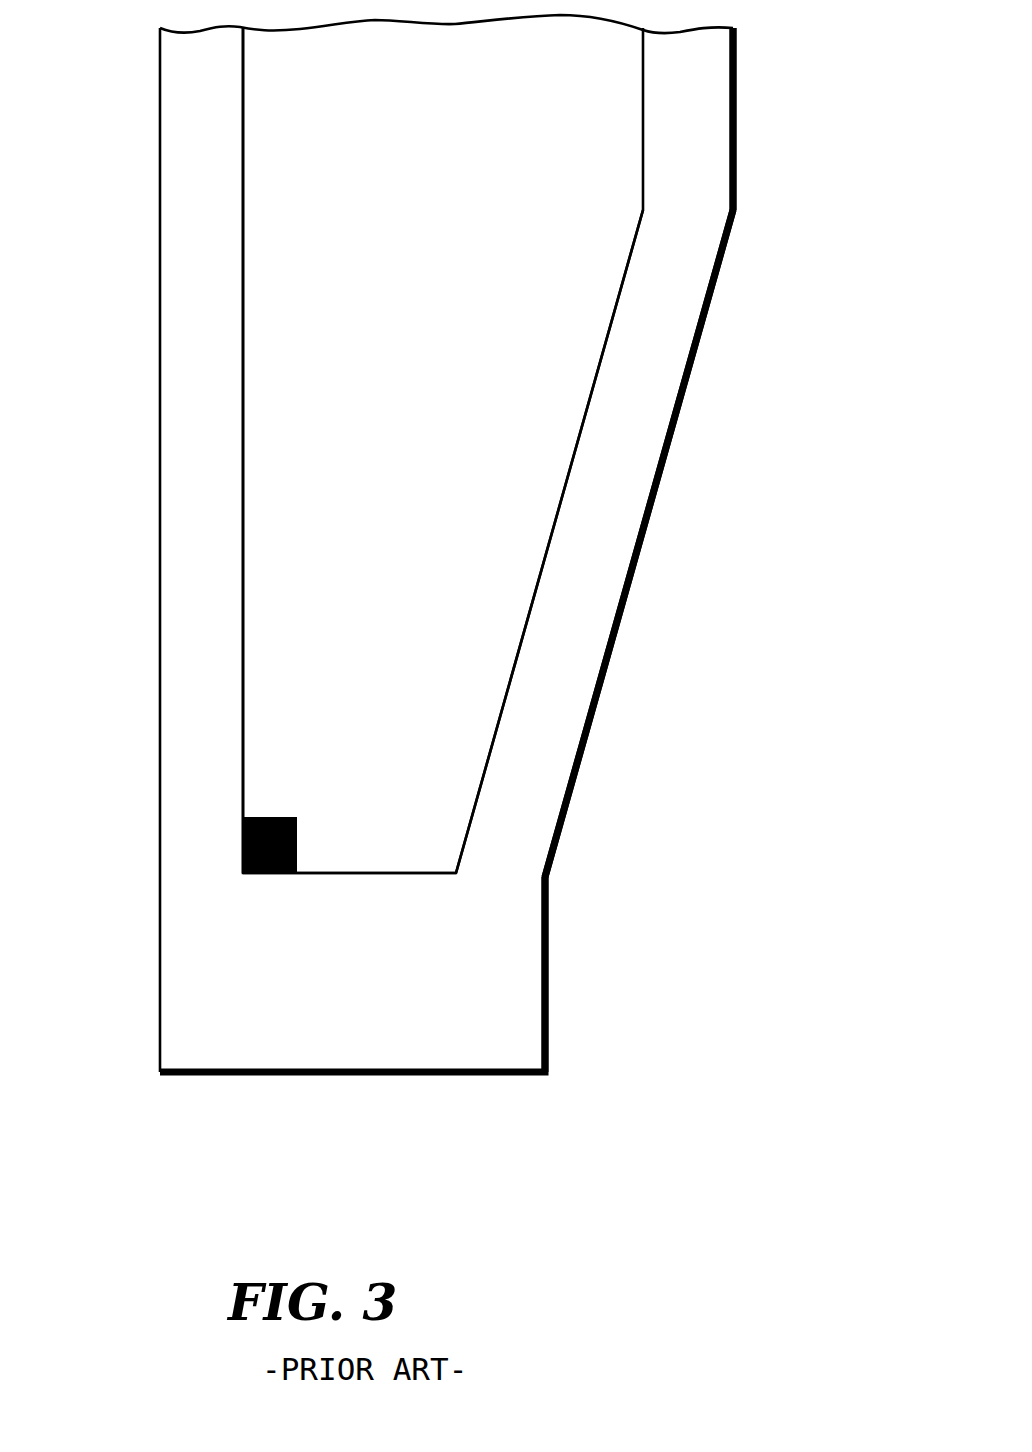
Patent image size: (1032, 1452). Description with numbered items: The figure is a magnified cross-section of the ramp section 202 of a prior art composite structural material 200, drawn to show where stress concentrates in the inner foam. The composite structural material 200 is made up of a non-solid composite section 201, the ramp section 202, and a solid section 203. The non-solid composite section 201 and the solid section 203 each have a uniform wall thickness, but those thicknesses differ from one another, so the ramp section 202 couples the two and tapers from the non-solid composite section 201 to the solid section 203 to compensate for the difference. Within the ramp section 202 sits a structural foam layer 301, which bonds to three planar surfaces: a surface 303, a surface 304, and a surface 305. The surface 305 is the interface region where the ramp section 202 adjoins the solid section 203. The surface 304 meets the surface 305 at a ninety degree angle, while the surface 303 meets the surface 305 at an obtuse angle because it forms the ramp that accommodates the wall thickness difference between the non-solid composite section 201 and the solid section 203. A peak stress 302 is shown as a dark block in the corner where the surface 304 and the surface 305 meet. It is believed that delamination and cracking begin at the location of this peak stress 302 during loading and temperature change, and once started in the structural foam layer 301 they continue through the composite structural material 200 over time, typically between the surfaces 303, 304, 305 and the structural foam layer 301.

The composite structural material 200 is at (390, 1222).
The non-solid composite section 201 is at (785, 128).
The ramp section 202 is at (679, 592).
The solid section 203 is at (602, 1003).
The structural foam layer 301 is at (528, 363).
The peak stress 302 is at (243, 845).
The surface 303 is at (502, 714).
The surface 304 is at (243, 323).
The surface 305 is at (378, 874).